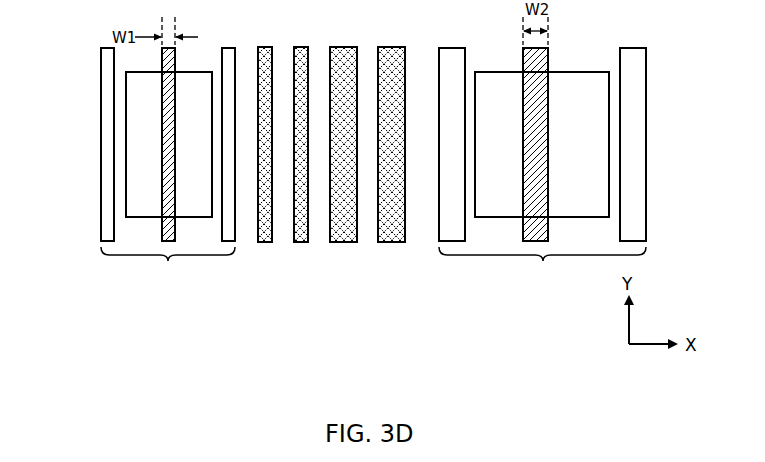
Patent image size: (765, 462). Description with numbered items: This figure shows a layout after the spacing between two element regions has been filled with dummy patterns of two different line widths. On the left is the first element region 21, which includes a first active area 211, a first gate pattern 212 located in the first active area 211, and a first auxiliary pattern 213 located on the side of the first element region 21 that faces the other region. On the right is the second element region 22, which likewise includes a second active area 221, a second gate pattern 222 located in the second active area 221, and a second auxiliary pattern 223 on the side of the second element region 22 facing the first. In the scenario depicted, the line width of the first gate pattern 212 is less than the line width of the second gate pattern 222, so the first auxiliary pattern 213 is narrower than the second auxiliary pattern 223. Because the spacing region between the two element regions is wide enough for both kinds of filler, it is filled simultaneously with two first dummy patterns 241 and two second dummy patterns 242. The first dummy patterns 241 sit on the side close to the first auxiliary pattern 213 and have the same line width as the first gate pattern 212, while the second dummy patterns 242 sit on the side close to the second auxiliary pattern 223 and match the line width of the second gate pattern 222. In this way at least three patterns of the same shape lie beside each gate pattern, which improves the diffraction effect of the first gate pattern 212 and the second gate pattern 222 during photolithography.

The first element region 21 is at (168, 268).
The first active area 211 is at (142, 217).
The first gate pattern 212 is at (162, 106).
The first auxiliary pattern 213 is at (101, 100).
The second element region 22 is at (542, 268).
The second active area 221 is at (501, 217).
The second gate pattern 222 is at (547, 105).
The second auxiliary pattern 223 is at (452, 48).
The first dummy pattern 241 is at (302, 243).
The second dummy pattern 242 is at (343, 243).